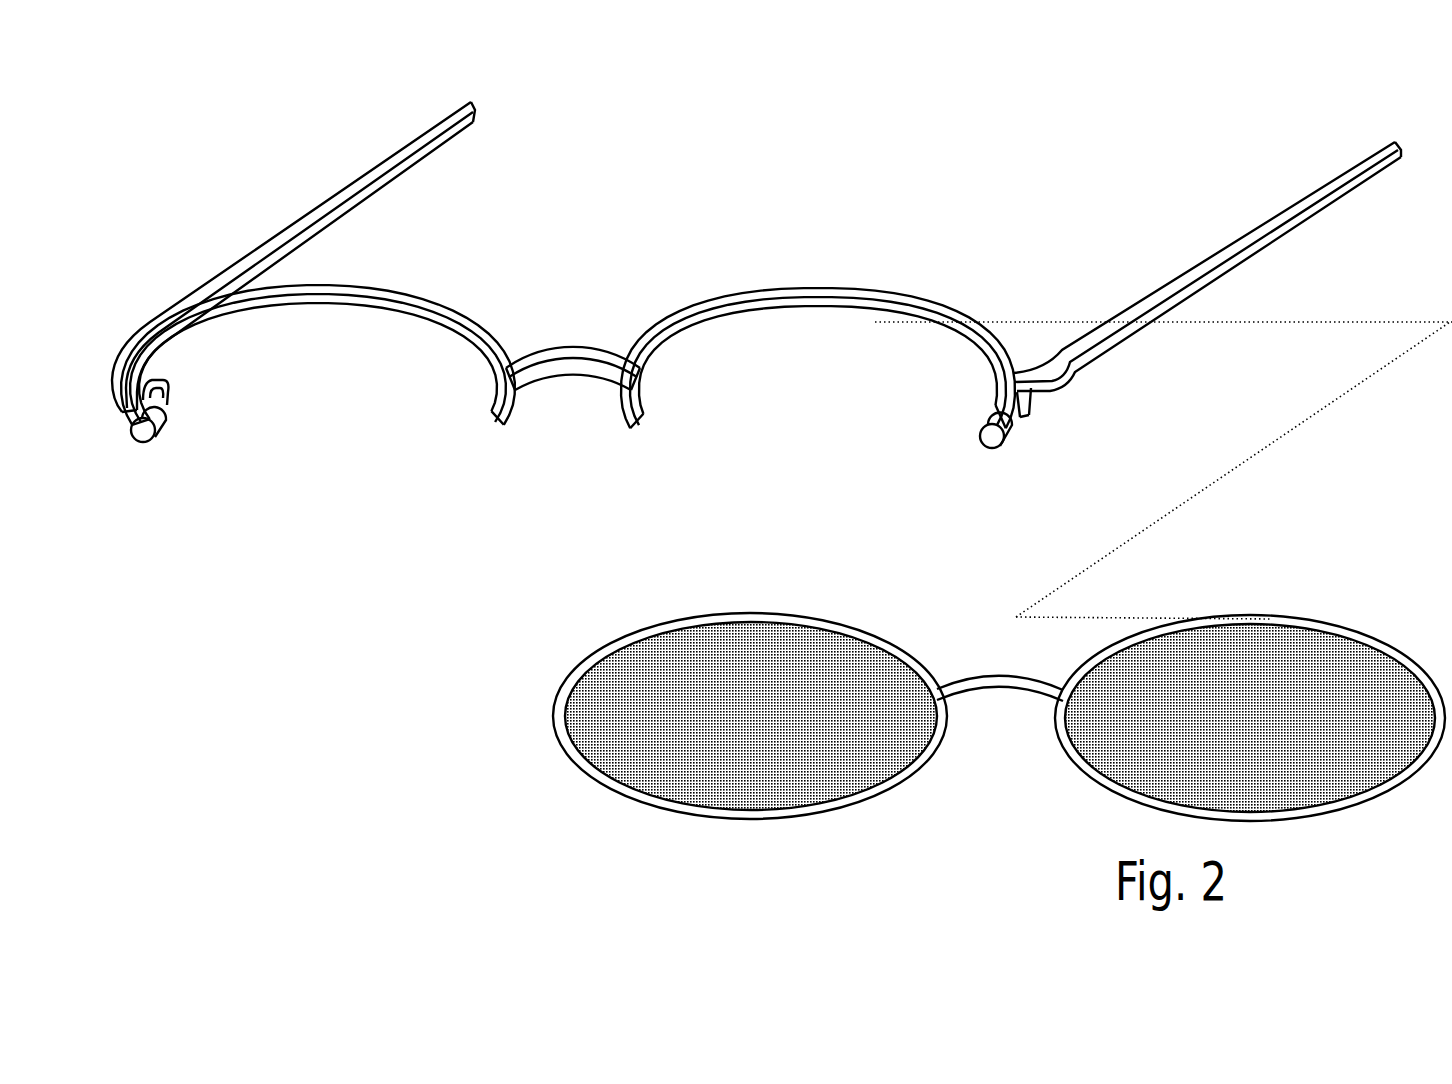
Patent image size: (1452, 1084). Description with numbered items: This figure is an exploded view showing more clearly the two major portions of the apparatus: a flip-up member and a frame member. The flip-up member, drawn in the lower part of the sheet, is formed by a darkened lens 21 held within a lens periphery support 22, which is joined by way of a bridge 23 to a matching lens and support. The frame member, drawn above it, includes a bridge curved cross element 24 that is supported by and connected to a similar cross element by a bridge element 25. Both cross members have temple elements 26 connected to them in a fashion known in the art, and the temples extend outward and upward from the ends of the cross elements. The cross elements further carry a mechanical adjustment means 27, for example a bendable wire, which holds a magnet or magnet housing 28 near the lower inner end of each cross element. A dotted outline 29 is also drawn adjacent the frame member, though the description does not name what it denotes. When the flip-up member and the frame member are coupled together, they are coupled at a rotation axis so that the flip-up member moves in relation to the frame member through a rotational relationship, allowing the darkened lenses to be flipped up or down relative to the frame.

The darkened lens 21 is at (667, 755).
The lens periphery support 22 is at (605, 648).
The bridge 23 is at (995, 680).
The bridge curved cross element 24 is at (433, 308).
The bridge element 25 is at (580, 350).
The temple elements 26 is at (350, 207).
The mechanical adjustment means 27 is at (172, 390).
The magnet or magnet housing 28 is at (145, 435).
The reference plane 29 is at (1245, 481).